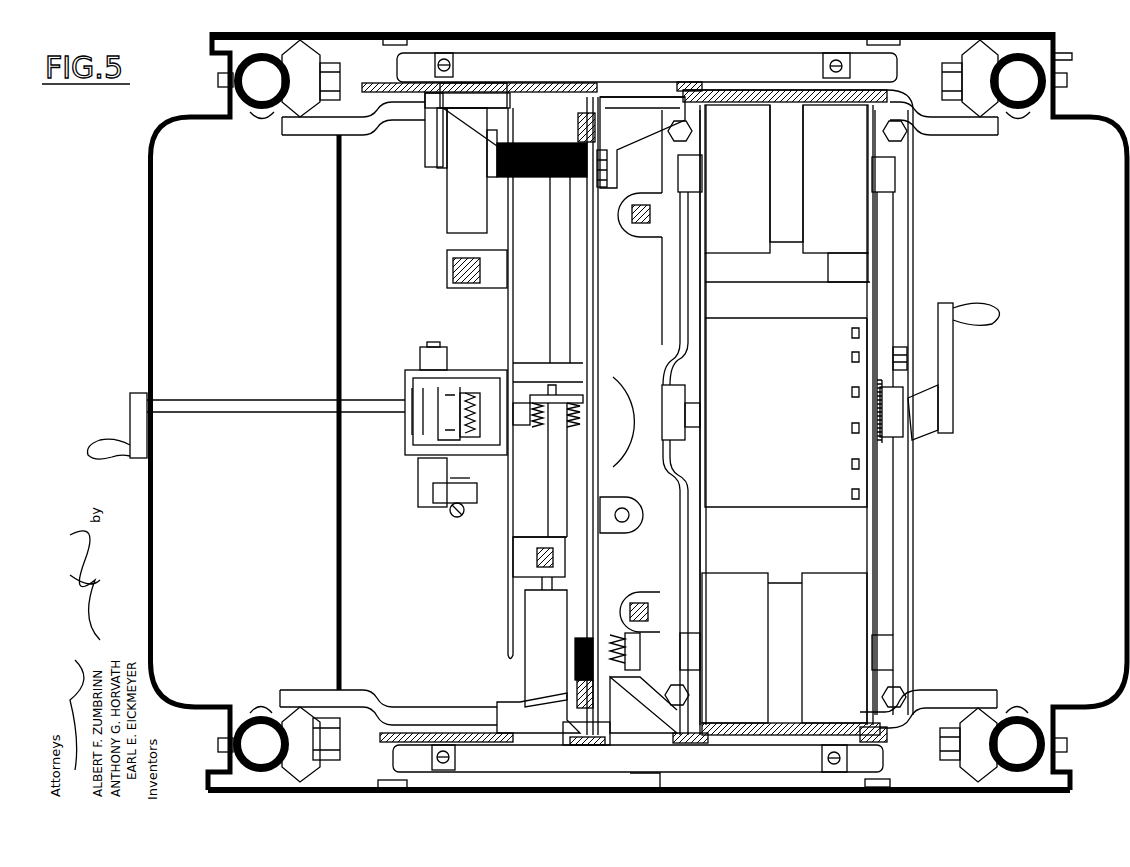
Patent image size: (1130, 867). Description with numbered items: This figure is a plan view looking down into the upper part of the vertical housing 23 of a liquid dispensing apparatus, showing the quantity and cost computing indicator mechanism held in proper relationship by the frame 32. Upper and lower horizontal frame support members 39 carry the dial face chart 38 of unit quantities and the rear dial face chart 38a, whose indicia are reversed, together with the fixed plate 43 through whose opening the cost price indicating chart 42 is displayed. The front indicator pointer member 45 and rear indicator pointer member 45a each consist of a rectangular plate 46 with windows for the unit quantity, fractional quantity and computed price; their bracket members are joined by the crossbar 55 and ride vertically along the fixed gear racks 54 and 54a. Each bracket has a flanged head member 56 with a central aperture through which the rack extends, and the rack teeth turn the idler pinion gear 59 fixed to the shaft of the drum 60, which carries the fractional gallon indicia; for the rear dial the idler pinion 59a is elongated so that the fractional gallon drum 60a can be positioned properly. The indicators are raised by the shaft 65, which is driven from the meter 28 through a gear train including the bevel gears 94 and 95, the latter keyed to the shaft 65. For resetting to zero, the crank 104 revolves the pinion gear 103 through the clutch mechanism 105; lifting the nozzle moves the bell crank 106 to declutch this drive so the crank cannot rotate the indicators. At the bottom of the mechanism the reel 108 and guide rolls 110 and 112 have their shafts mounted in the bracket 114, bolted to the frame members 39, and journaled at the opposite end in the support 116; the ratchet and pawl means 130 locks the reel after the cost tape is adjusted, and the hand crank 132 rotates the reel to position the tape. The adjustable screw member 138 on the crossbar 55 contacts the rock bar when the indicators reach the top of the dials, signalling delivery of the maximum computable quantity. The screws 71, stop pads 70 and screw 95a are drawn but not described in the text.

The vertical housing 23 is at (148, 170).
The frame 32 is at (239, 137).
The horizontal frame support members 39 is at (318, 135).
The dial face chart 38 is at (448, 735).
The rear dial face chart 38a is at (535, 80).
The indicator pointer member 45 is at (539, 759).
The rear indicator pointer member 45a is at (626, 71).
The rectangular plate 46 is at (615, 757).
The fixed plate 43 is at (690, 742).
The screw 71 is at (470, 92).
The crossbar 55 is at (600, 295).
The fixed gear rack 54 is at (579, 700).
The fixed gear rack 54a is at (596, 142).
The idler pinion gear 59 is at (588, 640).
The idler pinion 59a is at (548, 180).
The drum 60 is at (530, 633).
The fractional gallon drum 60a is at (447, 213).
The stop pad 70 is at (462, 278).
The support 116 is at (680, 304).
The bracket 114 is at (905, 270).
The cost price indicating chart 42 is at (745, 502).
The guide roll 112 is at (830, 280).
The guide roll 110 is at (880, 610).
The reel 108 is at (890, 525).
The ratchet and pawl means 130 is at (890, 450).
The hand crank 132 is at (945, 402).
The meter 28 is at (628, 385).
The crank 104 is at (135, 420).
The clutch mechanism 105 is at (465, 395).
The bell crank 106 is at (425, 493).
The screw 95a is at (459, 517).
The bevel gear 95 is at (583, 407).
The pinion gear 103 is at (540, 427).
The bevel gear 94 is at (575, 427).
The shaft 65 is at (553, 525).
The adjustable screw member 138 is at (638, 492).
The flanged head member 56 is at (628, 700).